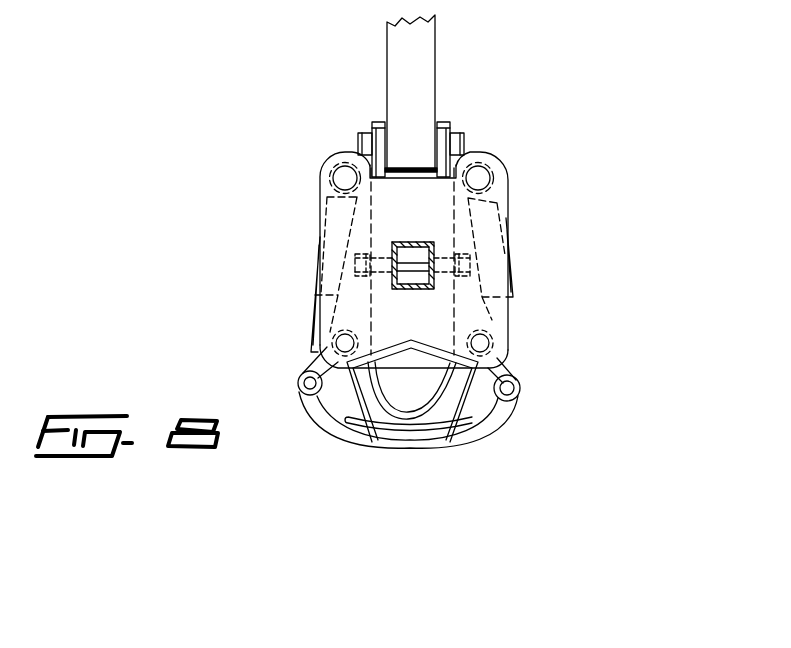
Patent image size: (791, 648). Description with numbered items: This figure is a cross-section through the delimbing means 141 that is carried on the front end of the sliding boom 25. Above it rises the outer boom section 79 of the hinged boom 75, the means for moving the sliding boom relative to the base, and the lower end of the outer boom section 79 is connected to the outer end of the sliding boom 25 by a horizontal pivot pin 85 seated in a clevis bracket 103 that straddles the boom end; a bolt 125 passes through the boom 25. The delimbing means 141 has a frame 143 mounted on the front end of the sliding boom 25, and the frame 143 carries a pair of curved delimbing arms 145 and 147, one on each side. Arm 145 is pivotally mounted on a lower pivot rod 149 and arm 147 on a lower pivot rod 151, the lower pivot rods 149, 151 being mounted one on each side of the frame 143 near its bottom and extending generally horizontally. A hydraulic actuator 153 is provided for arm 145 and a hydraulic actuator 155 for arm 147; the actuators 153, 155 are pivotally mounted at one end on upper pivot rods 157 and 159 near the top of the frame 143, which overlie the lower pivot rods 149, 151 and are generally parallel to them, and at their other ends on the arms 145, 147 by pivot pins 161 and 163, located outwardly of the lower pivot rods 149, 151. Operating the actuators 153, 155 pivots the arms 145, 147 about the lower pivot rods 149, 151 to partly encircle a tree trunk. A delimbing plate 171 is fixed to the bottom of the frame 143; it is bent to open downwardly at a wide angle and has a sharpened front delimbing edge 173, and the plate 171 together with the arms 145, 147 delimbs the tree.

The sliding boom 25 is at (409, 241).
The hinged boom 75 is at (418, 96).
The outer boom section 79 is at (437, 47).
The horizontal pivot pin 85 is at (460, 135).
The clevis bracket 103 is at (405, 165).
The bolt 125 is at (358, 275).
The delimbing means 141 is at (448, 305).
The frame 143 is at (433, 251).
The delimbing arm 145 is at (419, 397).
The delimbing arm 147 is at (313, 407).
The lower pivot rod 149 is at (490, 340).
The lower pivot rod 151 is at (335, 343).
The hydraulic actuator 153 is at (510, 198).
The hydraulic actuator 155 is at (312, 268).
The upper pivot rod 157 is at (493, 172).
The upper pivot rod 159 is at (333, 170).
The pivot pin 161 is at (522, 388).
The pivot pin 163 is at (297, 383).
The delimbing plate 171 is at (372, 368).
The front delimbing edge 173 is at (385, 352).